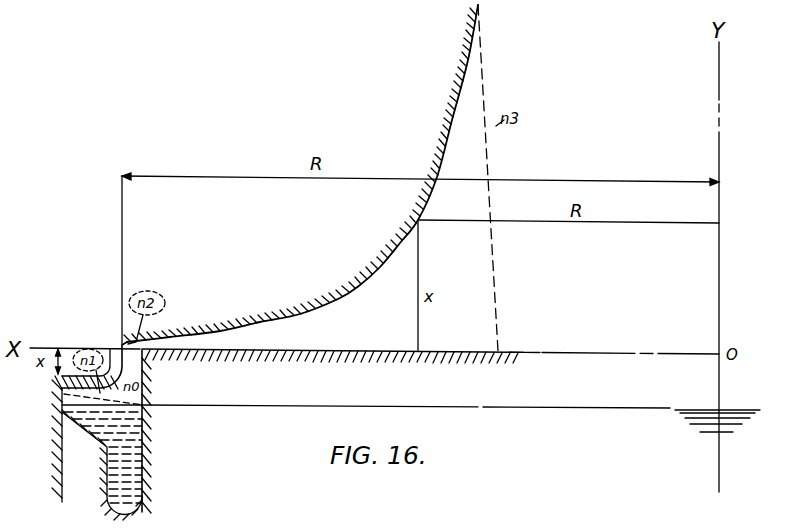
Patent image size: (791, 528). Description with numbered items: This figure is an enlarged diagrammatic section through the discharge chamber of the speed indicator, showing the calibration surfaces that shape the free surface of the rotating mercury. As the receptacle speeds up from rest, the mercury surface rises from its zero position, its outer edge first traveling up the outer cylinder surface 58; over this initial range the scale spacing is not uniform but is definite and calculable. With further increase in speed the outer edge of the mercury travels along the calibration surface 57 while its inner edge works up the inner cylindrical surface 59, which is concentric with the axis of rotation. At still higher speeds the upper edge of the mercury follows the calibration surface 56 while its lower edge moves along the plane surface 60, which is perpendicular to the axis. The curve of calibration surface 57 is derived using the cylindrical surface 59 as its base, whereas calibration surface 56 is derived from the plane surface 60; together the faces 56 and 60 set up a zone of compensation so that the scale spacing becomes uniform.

The calibration surface 56 is at (355, 283).
The calibration surface 57 is at (110, 370).
The outer cylinder surface 58 is at (62, 397).
The inner cylindrical surface 59 is at (146, 378).
The plane surface 60 is at (356, 350).